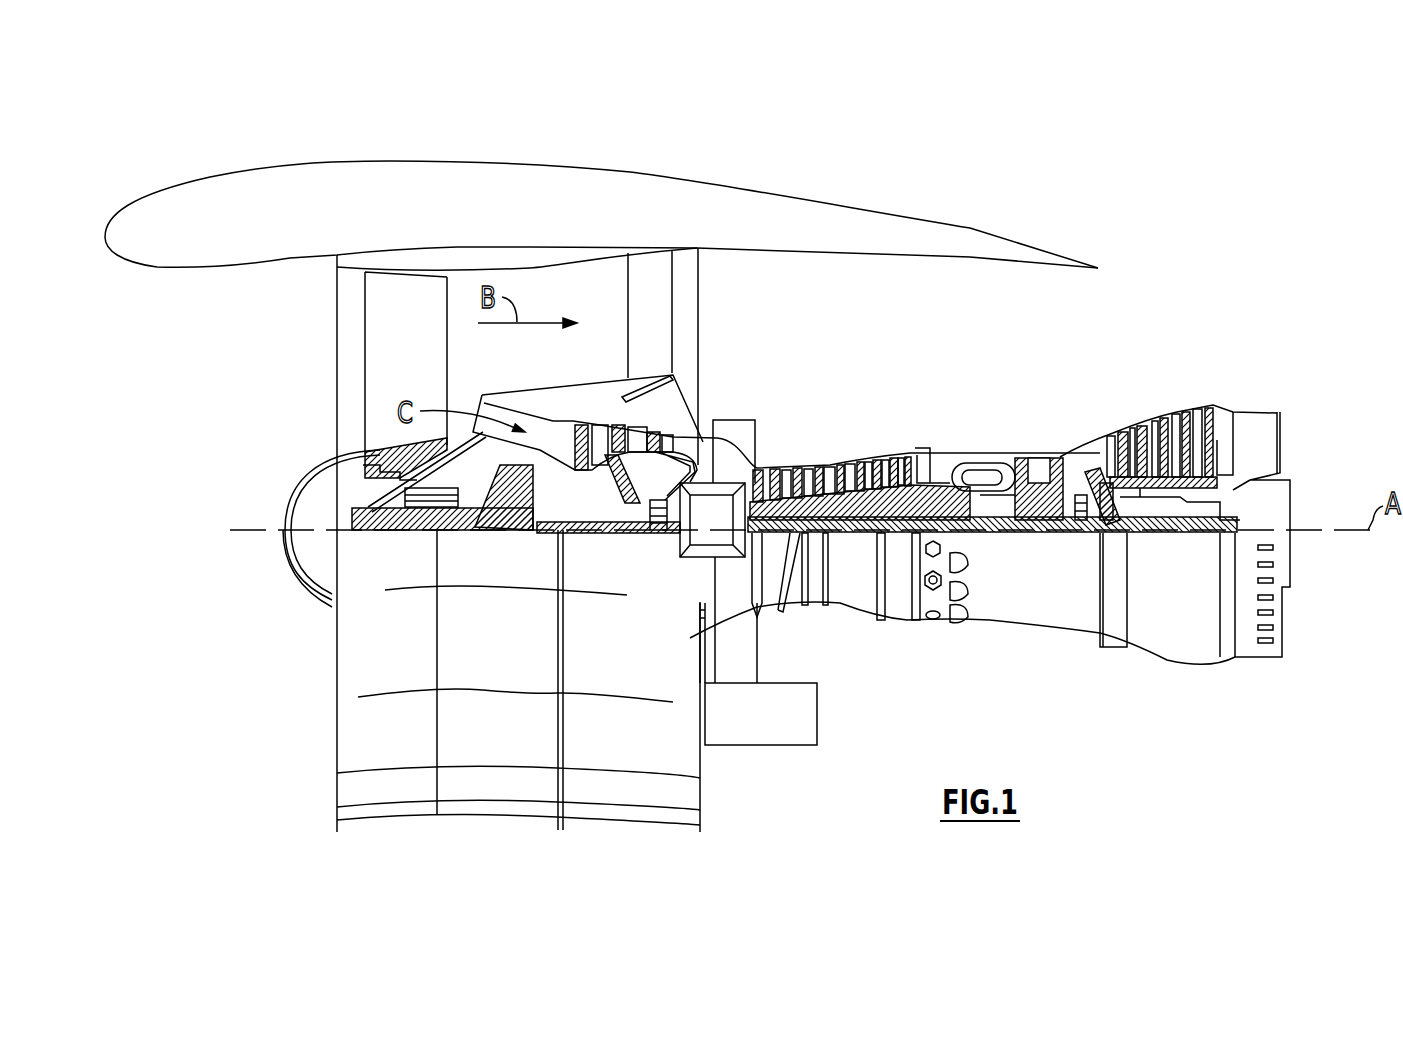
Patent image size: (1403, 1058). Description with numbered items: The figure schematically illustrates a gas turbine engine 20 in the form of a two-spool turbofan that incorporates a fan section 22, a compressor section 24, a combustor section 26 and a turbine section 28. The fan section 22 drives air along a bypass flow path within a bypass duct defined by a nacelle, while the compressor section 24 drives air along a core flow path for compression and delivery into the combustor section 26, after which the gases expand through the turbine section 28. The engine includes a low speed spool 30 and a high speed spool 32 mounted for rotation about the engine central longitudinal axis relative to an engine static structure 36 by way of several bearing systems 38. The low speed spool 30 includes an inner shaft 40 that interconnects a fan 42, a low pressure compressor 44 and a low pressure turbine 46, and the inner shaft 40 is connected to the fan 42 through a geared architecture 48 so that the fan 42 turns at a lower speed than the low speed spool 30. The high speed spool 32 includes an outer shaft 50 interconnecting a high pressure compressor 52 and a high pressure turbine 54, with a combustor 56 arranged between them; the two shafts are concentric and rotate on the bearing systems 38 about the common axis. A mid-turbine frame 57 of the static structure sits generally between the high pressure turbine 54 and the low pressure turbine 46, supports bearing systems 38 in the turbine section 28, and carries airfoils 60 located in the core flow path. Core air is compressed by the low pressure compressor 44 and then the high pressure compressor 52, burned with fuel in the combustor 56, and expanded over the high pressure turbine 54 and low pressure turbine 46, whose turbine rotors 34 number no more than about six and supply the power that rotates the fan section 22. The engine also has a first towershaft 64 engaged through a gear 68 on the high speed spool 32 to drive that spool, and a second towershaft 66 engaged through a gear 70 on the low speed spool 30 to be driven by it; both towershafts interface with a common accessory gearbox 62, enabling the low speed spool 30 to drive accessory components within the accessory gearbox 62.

The gas turbine engine 20 is at (1200, 230).
The fan section 22 is at (578, 157).
The compressor section 24 is at (925, 367).
The combustor section 26 is at (1028, 367).
The turbine section 28 is at (1232, 365).
The low speed spool 30 is at (857, 533).
The high speed spool 32 is at (898, 480).
The turbine rotors 34 is at (1190, 493).
The engine static structure 36 is at (898, 617).
The bearing systems 38 is at (408, 522).
The inner shaft 40 is at (780, 615).
The fan 42 is at (419, 377).
The low pressure compressor 44 is at (632, 432).
The low pressure turbine 46 is at (1165, 407).
The geared architecture 48 is at (525, 513).
The outer shaft 50 is at (978, 515).
The high pressure compressor 52 is at (822, 480).
The high pressure turbine 54 is at (1035, 447).
The combustor 56 is at (973, 470).
The mid-turbine frame 57 is at (1079, 445).
The airfoils 60 is at (1107, 507).
The accessory gearbox 62 is at (800, 727).
The first towershaft 64 is at (727, 467).
The second towershaft 66 is at (700, 620).
The gear 68 is at (685, 550).
The gear 70 is at (742, 522).